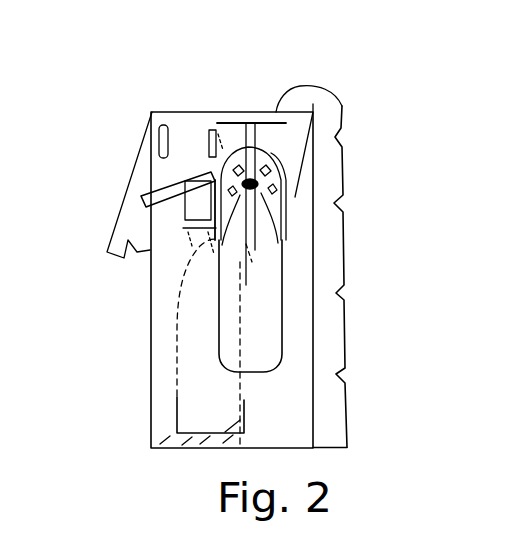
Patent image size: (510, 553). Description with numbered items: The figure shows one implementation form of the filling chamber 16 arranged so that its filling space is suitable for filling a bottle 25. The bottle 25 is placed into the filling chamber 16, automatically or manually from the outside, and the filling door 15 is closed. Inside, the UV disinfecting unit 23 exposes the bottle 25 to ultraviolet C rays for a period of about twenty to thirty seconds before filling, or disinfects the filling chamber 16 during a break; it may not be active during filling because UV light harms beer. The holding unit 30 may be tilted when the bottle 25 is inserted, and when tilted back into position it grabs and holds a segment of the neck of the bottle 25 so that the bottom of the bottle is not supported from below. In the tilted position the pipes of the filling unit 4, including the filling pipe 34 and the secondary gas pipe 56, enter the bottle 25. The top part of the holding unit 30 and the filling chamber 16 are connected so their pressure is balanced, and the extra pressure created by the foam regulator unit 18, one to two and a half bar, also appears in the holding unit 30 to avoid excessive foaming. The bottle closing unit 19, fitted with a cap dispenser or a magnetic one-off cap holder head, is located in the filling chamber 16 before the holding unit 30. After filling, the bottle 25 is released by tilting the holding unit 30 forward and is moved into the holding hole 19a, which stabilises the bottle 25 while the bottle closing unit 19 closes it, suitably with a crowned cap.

The filling unit 4 is at (248, 101).
The cross bar 56 is at (221, 116).
The UV disinfecting unit 23 is at (206, 142).
The foam regulator unit 18 is at (158, 146).
The filling door 15 is at (141, 183).
The bottle closing unit 19 is at (140, 204).
The filling pipe 34 is at (268, 88).
The holding unit 30 is at (280, 158).
The bottle 25 is at (274, 328).
The filling chamber 16 is at (300, 405).
The holding hole 19a is at (152, 446).